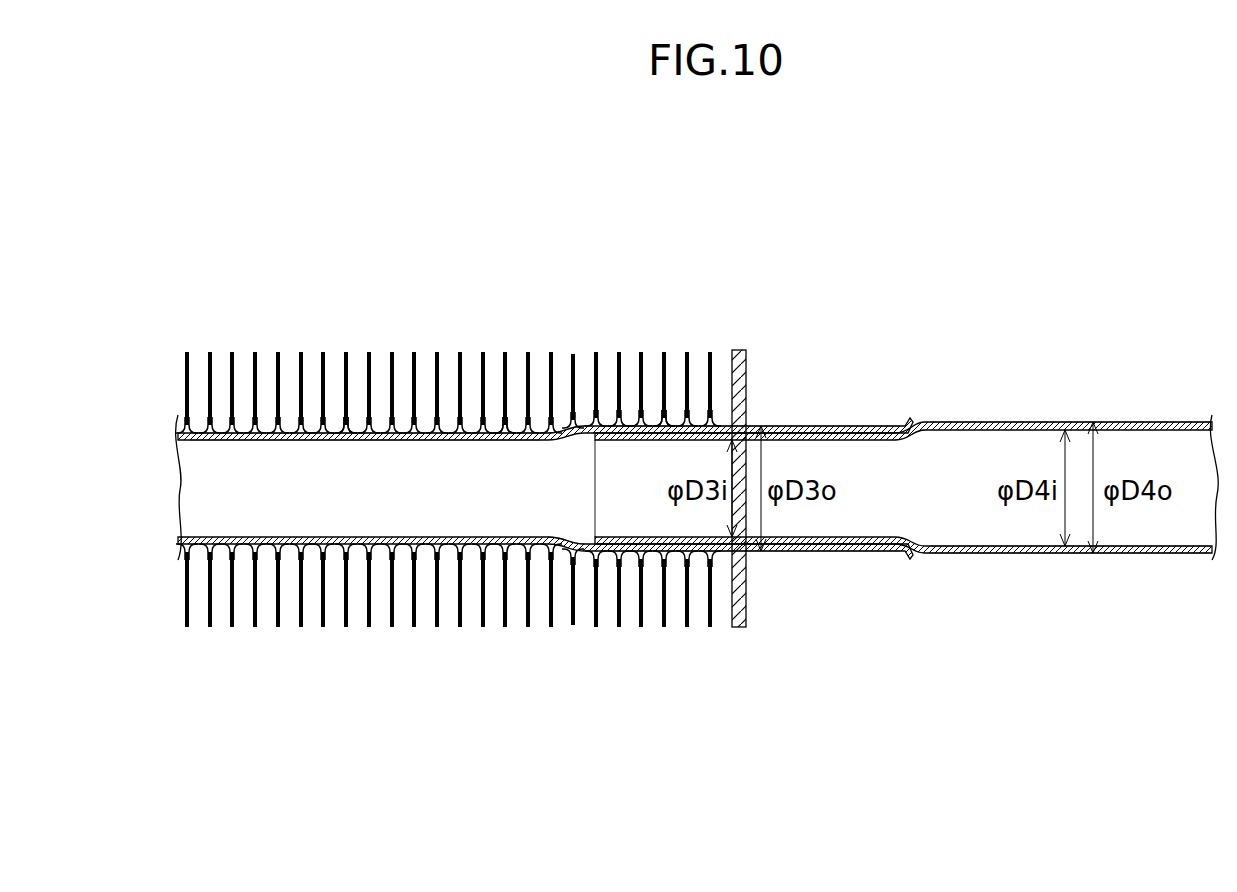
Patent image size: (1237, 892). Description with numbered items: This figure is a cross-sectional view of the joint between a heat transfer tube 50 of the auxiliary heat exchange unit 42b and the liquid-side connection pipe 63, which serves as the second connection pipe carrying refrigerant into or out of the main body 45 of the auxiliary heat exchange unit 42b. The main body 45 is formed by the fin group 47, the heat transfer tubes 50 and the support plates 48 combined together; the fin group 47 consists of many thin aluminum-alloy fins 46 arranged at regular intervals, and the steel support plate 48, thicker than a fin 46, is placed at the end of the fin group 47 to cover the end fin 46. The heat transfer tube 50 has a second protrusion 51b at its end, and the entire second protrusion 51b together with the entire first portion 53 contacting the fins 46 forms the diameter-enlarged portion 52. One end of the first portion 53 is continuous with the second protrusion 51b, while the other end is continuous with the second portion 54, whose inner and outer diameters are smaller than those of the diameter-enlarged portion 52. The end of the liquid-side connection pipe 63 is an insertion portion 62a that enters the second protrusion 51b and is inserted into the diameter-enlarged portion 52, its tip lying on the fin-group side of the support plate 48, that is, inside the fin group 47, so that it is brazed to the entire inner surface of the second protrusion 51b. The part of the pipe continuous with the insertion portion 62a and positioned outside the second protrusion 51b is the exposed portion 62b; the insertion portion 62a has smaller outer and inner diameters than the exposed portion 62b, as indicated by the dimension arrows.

The auxiliary heat exchange unit 42b is at (243, 313).
The main body 45 is at (361, 340).
The fin 46 is at (666, 362).
The fin group 47 is at (508, 340).
The support plate 48 is at (747, 360).
The heat transfer tube 50 is at (170, 492).
The second protrusion 51b is at (849, 421).
The diameter-enlarged portion 52 is at (776, 426).
The first portion 53 is at (590, 542).
The second portion 54 is at (296, 442).
The insertion portion 62a is at (838, 537).
The exposed portion 62b is at (995, 555).
The liquid-side connection pipe 63 is at (1130, 420).